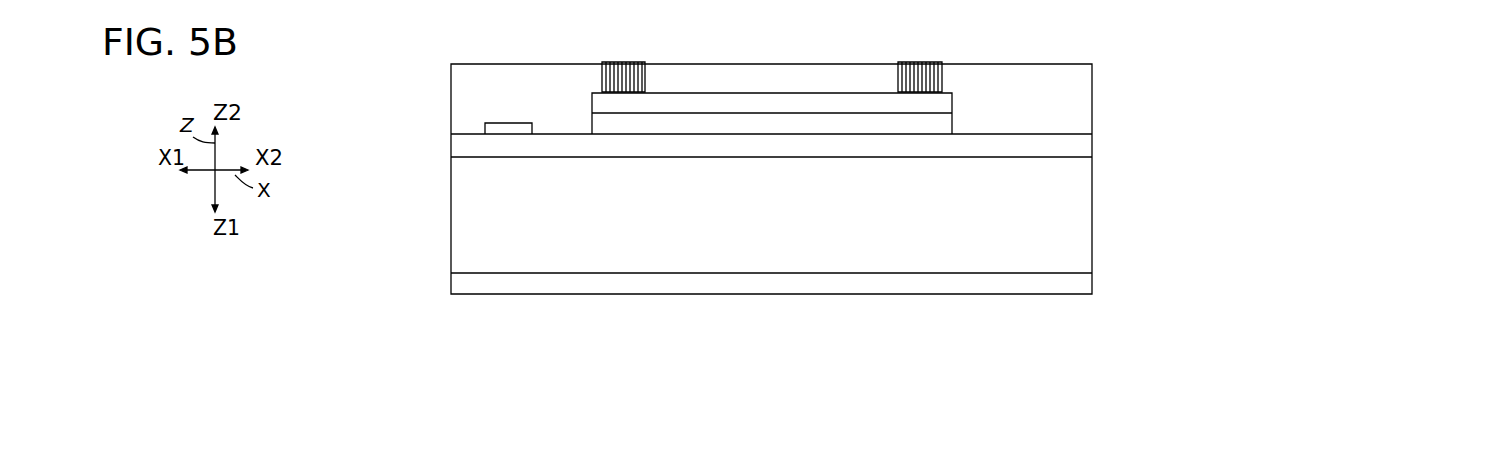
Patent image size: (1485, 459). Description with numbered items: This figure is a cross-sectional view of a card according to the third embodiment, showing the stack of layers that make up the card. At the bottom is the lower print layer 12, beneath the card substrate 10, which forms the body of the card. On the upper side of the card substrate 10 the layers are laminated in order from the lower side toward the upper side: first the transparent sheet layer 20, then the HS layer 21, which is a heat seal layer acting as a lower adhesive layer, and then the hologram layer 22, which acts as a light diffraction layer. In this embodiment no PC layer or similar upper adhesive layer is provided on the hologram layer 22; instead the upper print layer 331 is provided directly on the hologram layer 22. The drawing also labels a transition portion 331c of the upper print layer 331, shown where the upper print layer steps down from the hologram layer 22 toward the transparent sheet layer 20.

The upper print layer 331 is at (1065, 89).
The transition portion 331c is at (632, 54).
The hologram layer 22 is at (937, 104).
The HS layer 21 is at (937, 127).
The transparent sheet layer 20 is at (1072, 143).
The card substrate 10 is at (1033, 235).
The lower print layer 12 is at (1073, 285).